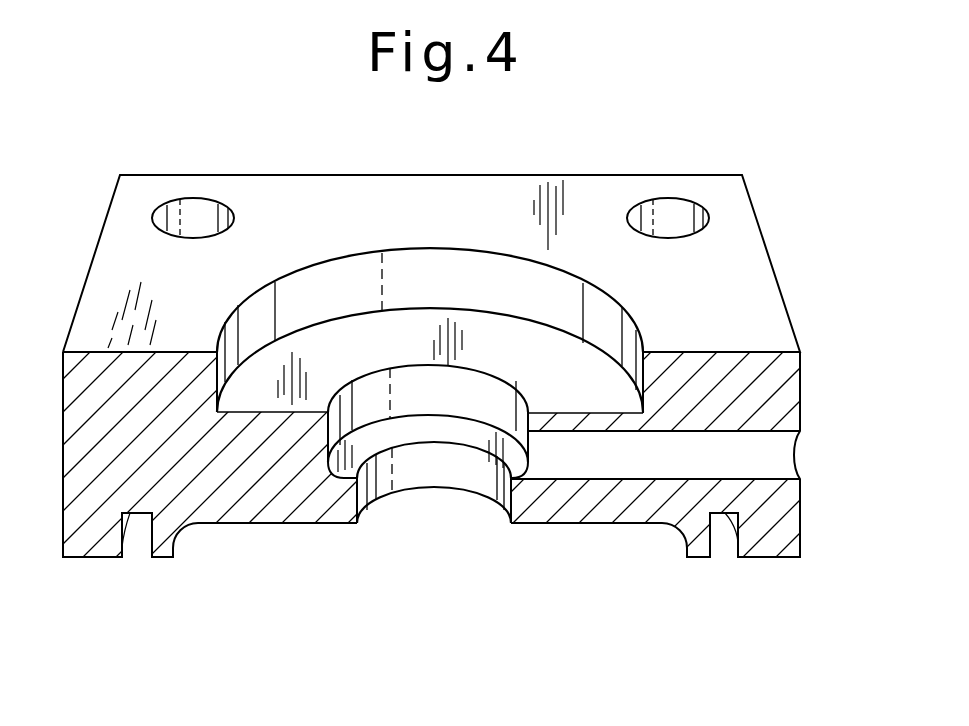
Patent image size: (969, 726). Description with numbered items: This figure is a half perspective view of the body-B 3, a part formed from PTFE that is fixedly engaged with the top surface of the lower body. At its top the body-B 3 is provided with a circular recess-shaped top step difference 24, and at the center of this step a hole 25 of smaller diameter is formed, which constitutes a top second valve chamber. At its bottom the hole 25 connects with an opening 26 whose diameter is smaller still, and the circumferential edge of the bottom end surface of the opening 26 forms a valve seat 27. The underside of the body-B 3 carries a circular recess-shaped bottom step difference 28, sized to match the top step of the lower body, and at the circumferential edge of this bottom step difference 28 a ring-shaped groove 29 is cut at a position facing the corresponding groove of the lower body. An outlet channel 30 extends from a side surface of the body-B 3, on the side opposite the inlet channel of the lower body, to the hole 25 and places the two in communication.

The body-B 3 is at (710, 307).
The top step difference 24 is at (430, 288).
The hole 25 is at (353, 410).
The opening 26 is at (462, 477).
The valve seat 27 is at (345, 513).
The bottom step difference 28 is at (605, 538).
The ring-shaped groove 29 is at (138, 543).
The outlet channel 30 is at (747, 455).